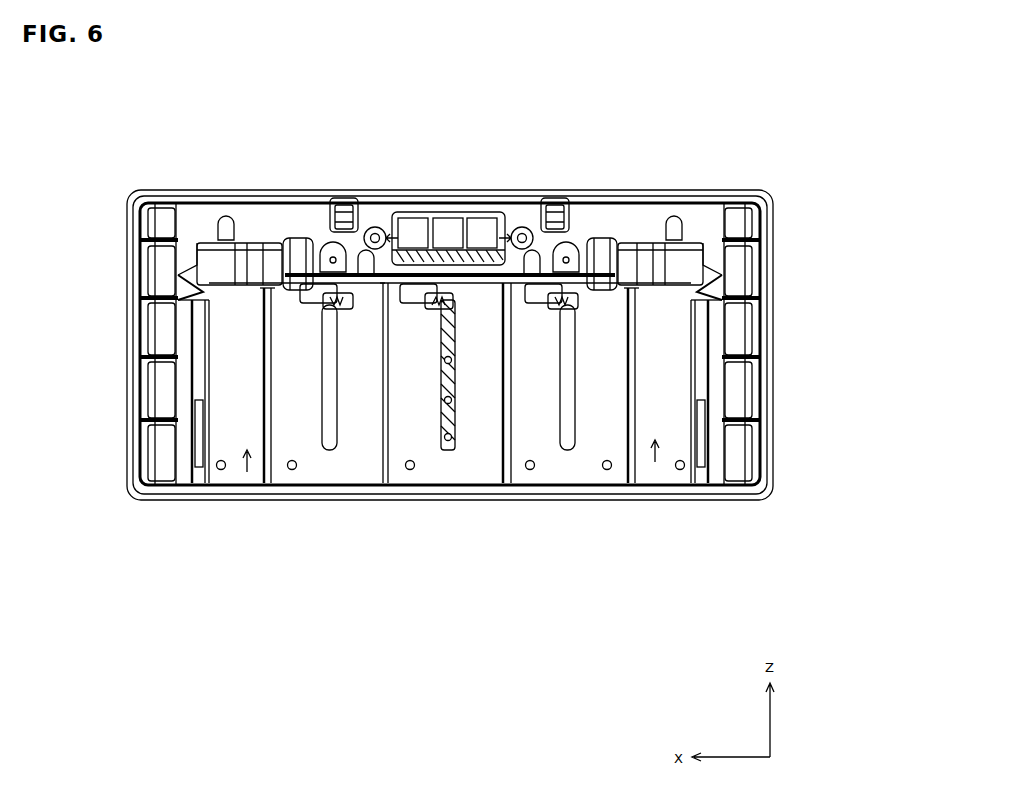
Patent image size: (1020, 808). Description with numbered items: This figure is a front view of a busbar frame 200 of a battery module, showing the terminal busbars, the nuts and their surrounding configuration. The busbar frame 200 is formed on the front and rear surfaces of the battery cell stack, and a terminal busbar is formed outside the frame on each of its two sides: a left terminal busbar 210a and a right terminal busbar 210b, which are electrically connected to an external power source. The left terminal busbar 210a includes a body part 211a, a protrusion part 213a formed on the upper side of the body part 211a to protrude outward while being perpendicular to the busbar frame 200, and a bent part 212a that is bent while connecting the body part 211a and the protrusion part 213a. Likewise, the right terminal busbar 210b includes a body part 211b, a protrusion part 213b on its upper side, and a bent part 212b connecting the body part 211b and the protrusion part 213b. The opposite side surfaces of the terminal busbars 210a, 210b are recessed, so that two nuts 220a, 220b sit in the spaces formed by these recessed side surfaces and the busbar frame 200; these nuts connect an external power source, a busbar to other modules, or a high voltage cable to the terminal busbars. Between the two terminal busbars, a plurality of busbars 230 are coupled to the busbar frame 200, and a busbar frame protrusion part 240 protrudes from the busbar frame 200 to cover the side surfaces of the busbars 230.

The busbar frame 200 is at (651, 205).
The left terminal busbar 210a is at (248, 482).
The right terminal busbar 210b is at (658, 484).
The body part 211a is at (220, 383).
The body part 211b is at (678, 375).
The bent part 212a is at (195, 292).
The bent part 212b is at (720, 278).
The protrusion part 213a is at (148, 240).
The protrusion part 213b is at (700, 243).
The nut 220a is at (255, 266).
The nut 220b is at (653, 225).
The busbar 230 is at (456, 236).
The busbar frame protrusion part 240 is at (287, 282).